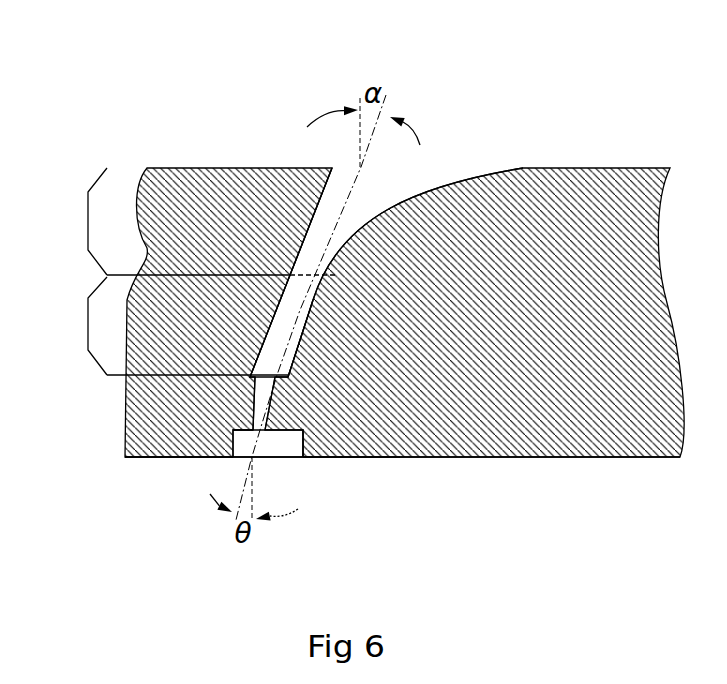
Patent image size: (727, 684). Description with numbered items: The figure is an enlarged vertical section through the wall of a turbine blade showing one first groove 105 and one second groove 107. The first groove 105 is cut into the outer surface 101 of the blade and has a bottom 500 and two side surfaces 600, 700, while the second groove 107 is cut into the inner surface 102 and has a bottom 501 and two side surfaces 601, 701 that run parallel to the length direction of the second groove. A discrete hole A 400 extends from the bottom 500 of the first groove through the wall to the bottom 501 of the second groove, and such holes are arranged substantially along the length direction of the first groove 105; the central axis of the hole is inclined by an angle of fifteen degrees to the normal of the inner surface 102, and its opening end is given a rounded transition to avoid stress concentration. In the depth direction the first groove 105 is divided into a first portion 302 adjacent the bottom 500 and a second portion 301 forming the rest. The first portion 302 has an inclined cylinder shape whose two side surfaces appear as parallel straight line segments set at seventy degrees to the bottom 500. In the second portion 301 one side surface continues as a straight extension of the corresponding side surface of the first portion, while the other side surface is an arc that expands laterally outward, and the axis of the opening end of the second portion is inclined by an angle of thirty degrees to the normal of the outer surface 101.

The outer surface of the turbine blade 101 is at (592, 168).
The inner surface of the turbine blade 102 is at (503, 457).
The first groove 105 is at (311, 240).
The second groove 107 is at (294, 472).
The second portion of the groove 301 is at (173, 221).
The first portion of the groove 302 is at (150, 326).
The discrete hole A 400 is at (236, 419).
The bottom of the first groove 500 is at (247, 390).
The bottom of the second groove 501 is at (303, 448).
The side surface of the first groove 600 is at (310, 167).
The side surface of the second groove 601 is at (224, 472).
The side surface of the first groove 700 is at (410, 197).
The side surface of the second groove 701 is at (323, 455).